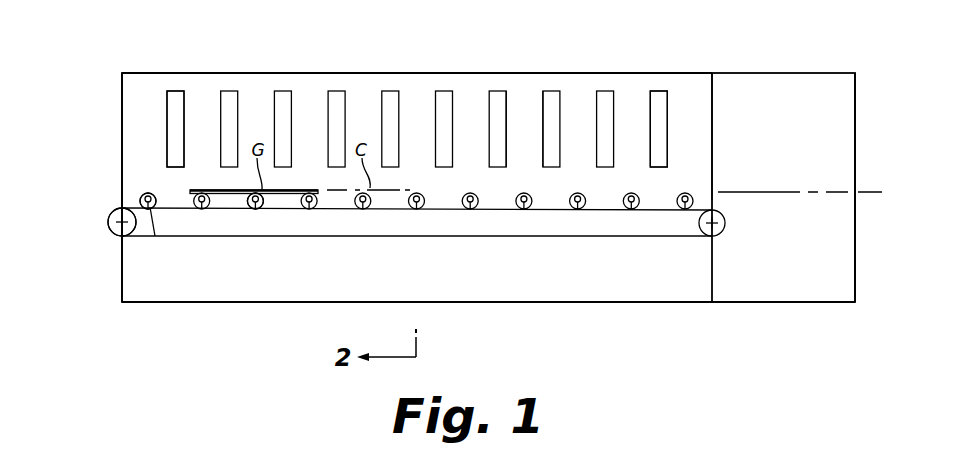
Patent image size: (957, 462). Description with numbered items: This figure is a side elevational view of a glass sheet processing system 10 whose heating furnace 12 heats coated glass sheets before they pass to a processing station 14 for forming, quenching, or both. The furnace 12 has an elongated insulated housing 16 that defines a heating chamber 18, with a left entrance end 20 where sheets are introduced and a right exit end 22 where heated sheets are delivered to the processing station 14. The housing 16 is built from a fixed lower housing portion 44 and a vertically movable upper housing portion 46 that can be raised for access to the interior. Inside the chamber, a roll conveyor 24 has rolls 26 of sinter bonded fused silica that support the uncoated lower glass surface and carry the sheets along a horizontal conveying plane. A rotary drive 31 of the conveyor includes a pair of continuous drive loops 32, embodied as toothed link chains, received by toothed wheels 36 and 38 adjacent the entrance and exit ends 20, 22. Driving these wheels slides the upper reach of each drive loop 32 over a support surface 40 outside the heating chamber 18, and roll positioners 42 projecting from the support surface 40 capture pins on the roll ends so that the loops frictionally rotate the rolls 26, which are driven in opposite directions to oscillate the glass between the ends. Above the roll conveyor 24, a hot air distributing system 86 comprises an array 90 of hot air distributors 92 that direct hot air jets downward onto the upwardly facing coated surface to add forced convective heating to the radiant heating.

The glass sheet processing system 10 is at (636, 38).
The heating furnace 12 is at (350, 58).
The processing station 14 is at (760, 58).
The insulated housing 16 is at (458, 68).
The heating chamber 18 is at (523, 133).
The entrance end 20 is at (122, 135).
The exit end 22 is at (713, 134).
The roll conveyor 24 is at (118, 197).
The conveyor rolls 26 is at (215, 195).
The rotary drive 31 is at (95, 228).
The continuous drive loops 32 is at (172, 203).
The toothed wheel 36 is at (112, 236).
The toothed wheel 38 is at (725, 226).
The support surface 40 is at (325, 209).
The roll positioners 42 is at (297, 195).
The lower housing portion 44 is at (170, 299).
The upper housing portion 46 is at (200, 88).
The hot air distributing system 86 is at (692, 117).
The array of hot air distributors 90 is at (684, 95).
The hot air distributors 92 is at (274, 91).